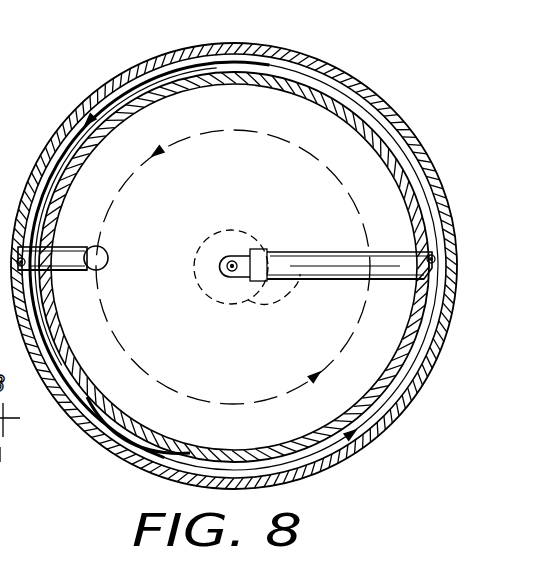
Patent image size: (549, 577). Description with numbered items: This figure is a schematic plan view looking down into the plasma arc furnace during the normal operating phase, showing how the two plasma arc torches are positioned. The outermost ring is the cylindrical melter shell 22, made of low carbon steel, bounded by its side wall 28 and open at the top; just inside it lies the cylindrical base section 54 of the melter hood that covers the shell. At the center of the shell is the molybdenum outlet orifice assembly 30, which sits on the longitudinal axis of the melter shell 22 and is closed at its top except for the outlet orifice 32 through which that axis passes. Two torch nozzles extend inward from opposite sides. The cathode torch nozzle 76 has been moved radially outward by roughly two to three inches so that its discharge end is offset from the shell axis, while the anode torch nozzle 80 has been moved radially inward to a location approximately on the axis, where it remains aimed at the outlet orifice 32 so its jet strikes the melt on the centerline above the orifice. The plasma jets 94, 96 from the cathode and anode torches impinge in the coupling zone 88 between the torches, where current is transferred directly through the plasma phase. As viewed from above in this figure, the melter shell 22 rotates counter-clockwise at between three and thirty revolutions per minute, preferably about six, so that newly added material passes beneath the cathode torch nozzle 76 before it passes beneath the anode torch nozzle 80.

The melter shell 22 is at (375, 410).
The side wall 28 is at (85, 402).
The outlet orifice assembly 30 is at (277, 292).
The outlet orifice 32 is at (203, 297).
The cylindrical base section 54 is at (90, 102).
The cathode torch nozzle 76 is at (66, 272).
The anode torch nozzle 80 is at (335, 222).
The coupling zone 88 is at (165, 276).
The plasma jet 94 is at (90, 245).
The plasma jet 96 is at (236, 255).